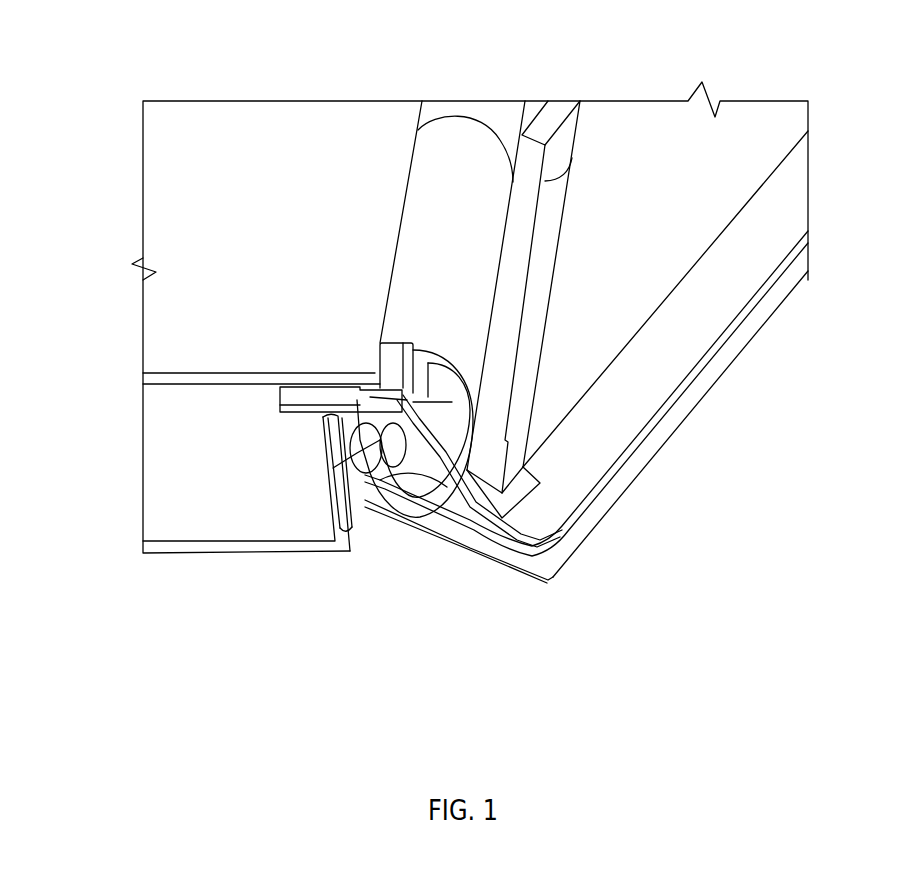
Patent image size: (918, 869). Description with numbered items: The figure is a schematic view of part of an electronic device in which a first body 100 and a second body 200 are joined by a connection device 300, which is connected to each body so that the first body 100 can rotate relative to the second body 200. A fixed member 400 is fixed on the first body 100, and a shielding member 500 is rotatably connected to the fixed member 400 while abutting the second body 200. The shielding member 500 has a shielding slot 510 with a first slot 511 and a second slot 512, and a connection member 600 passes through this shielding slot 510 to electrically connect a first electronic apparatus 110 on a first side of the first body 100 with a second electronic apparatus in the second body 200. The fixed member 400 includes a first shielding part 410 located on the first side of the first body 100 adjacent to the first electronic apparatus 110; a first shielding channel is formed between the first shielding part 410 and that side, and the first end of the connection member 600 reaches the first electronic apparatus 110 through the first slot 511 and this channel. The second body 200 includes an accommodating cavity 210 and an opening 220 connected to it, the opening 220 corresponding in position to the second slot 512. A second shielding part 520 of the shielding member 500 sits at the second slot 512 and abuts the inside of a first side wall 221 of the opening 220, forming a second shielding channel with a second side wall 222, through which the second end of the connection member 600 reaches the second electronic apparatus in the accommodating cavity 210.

The first body 100 is at (586, 427).
The first electronic apparatus 110 is at (697, 299).
The second body 200 is at (428, 317).
The accommodating cavity 210 is at (211, 411).
The opening 220 is at (208, 482).
The first side wall 221 is at (209, 335).
The second side wall 222 is at (230, 509).
The connection device 300 is at (472, 105).
The fixed member 400 is at (328, 222).
The first shielding part 410 is at (578, 285).
The shielding member 500 is at (296, 316).
The shielding slot 510 is at (399, 510).
The first slot 511 is at (436, 568).
The second slot 512 is at (316, 534).
The second shielding part 520 is at (247, 380).
The connection member 600 is at (586, 437).